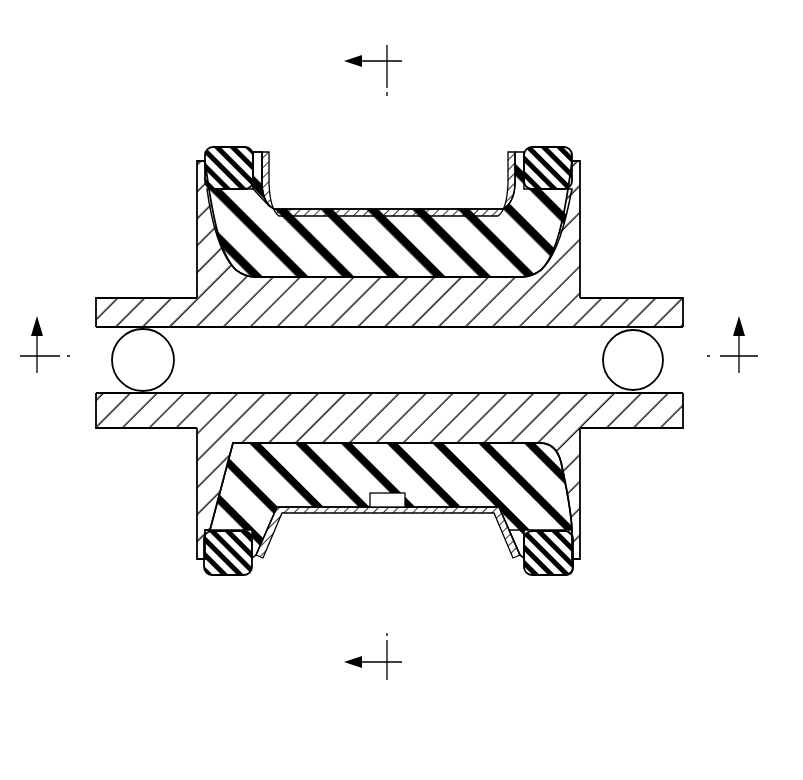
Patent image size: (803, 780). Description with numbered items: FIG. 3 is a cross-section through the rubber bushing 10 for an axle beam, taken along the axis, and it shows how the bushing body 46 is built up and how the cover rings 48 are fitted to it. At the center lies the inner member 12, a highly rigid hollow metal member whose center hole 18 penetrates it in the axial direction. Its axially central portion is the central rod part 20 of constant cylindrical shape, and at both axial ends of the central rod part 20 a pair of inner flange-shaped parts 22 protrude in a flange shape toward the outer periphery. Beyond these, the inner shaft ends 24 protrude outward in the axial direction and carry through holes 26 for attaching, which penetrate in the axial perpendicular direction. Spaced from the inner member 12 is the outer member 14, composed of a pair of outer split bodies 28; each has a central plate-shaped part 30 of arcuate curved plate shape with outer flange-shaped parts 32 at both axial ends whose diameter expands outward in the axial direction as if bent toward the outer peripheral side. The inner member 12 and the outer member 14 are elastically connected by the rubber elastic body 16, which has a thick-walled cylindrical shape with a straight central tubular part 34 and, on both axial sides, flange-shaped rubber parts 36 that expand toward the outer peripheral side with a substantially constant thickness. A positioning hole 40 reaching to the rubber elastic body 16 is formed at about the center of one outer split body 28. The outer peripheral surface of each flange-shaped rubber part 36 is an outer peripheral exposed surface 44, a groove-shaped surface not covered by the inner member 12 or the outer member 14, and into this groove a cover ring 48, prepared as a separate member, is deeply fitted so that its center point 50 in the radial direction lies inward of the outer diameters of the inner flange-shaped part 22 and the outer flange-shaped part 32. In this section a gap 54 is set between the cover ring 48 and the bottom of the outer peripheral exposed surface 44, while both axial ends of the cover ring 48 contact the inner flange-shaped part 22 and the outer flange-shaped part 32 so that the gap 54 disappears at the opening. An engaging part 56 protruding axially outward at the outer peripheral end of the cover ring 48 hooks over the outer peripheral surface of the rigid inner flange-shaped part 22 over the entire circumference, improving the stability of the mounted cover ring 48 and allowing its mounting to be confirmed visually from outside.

The rubber bushing 10 is at (606, 88).
The inner member 12 is at (628, 290).
The outer member 14 is at (344, 520).
The rubber elastic body 16 is at (230, 452).
The center hole 18 is at (466, 392).
The central rod part 20 is at (317, 428).
The inner flange-shaped part 22 is at (212, 272).
The inner shaft end 24 is at (133, 313).
The through hole 26 is at (653, 340).
The outer split body 28 is at (388, 375).
The central plate-shaped part 30 is at (458, 212).
The outer flange-shaped part 32 is at (262, 176).
The central tubular part 34 is at (412, 226).
The flange-shaped rubber part 36 is at (223, 498).
The positioning hole 40 is at (382, 501).
The outer peripheral exposed surface 44 is at (234, 170).
The bushing body 46 is at (348, 190).
The cover ring 48 is at (408, 381).
The center point 50 is at (545, 556).
The gap 54 is at (238, 533).
The engaging part 56 is at (567, 573).